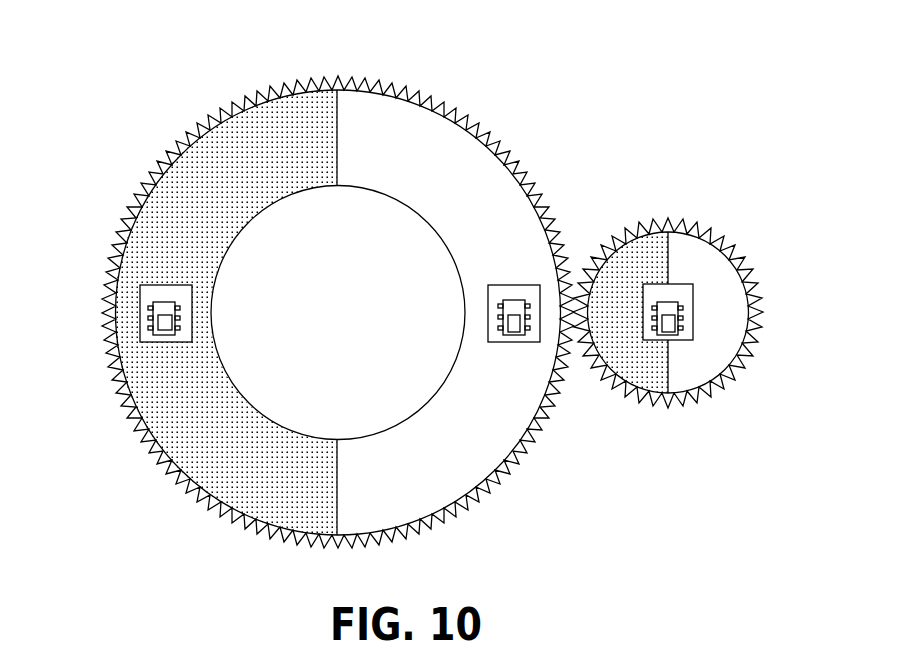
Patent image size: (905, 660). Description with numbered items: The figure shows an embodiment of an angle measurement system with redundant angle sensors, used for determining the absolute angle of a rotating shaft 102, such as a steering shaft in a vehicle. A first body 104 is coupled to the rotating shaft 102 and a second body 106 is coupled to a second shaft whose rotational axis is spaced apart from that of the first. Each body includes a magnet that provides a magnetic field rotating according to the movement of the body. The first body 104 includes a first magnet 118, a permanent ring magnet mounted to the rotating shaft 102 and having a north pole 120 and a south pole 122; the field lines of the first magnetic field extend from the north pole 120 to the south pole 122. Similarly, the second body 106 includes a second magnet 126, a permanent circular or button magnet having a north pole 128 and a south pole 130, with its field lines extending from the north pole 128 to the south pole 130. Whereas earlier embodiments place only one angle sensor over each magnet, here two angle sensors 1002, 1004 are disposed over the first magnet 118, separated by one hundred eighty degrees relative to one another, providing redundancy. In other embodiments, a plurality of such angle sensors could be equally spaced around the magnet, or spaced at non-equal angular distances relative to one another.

The rotating shaft 102 is at (356, 322).
The first body 104 is at (147, 138).
The second body 106 is at (735, 205).
The first magnet 118 is at (333, 96).
The north pole 120 is at (171, 404).
The south pole 122 is at (508, 405).
The second magnet 126 is at (660, 243).
The north pole 128 is at (647, 280).
The south pole 130 is at (719, 280).
The angle sensor 1002 is at (160, 340).
The angle sensor 1004 is at (505, 330).